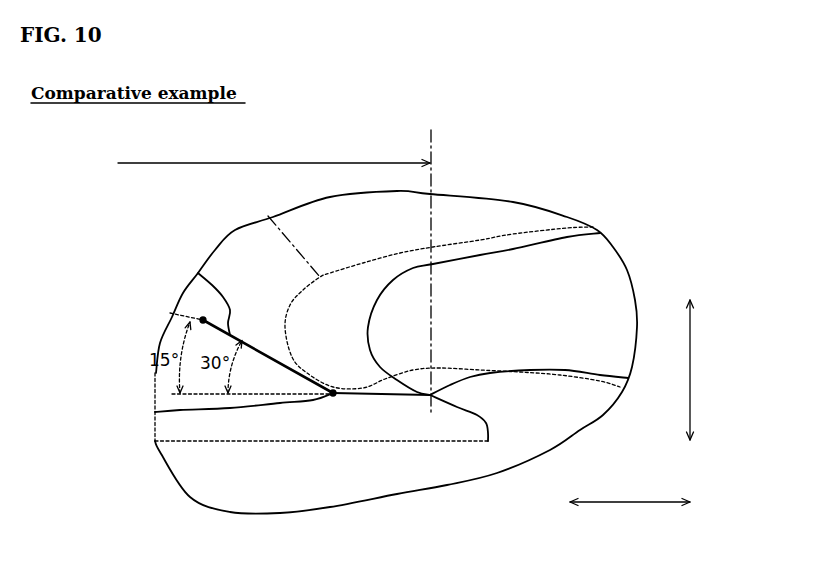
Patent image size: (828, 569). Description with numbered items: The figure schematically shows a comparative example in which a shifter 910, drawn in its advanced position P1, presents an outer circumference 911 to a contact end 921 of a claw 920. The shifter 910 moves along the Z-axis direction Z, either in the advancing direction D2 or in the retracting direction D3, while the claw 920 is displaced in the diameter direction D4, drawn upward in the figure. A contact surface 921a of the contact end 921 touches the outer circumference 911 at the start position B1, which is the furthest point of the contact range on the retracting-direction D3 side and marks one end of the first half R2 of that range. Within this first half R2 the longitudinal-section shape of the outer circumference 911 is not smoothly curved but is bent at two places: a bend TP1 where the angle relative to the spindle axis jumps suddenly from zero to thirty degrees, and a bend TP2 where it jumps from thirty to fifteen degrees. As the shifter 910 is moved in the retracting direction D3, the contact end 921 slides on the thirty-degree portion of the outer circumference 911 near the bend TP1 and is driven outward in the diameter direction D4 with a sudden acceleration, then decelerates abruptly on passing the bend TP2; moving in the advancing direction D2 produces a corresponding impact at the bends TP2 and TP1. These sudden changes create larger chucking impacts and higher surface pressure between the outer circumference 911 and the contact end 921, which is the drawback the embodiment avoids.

The shifter 910 is at (175, 441).
The outer circumference 911 is at (198, 275).
The claw 920 is at (567, 230).
The contact end 921 is at (266, 214).
The contact surface 921a is at (424, 397).
The start position B1 is at (431, 397).
The bend TP1 is at (156, 412).
The bend TP2 is at (203, 320).
The advanced position P1 is at (212, 476).
The first half R2 is at (274, 155).
The diameter direction D4 is at (704, 370).
The advancing direction D2 is at (613, 503).
The retracting direction D3 is at (709, 503).
The Z-axis direction Z is at (628, 518).